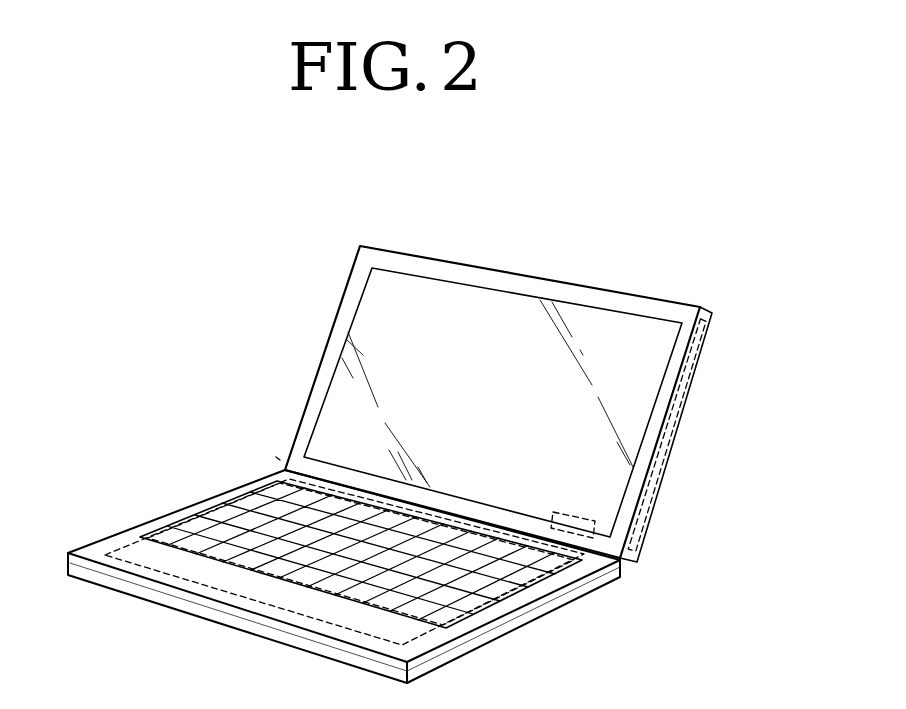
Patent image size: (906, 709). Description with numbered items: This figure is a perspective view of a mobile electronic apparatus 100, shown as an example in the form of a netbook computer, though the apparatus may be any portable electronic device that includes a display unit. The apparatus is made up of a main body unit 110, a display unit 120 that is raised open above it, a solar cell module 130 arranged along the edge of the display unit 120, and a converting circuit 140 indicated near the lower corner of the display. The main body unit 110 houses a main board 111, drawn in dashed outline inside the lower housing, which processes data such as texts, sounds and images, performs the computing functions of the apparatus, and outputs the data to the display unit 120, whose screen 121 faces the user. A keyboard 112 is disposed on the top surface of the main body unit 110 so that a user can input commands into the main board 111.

The mobile electronic apparatus 100 is at (190, 233).
The main body unit 110 is at (557, 617).
The main board 111 is at (157, 560).
The keyboard 112 is at (185, 520).
The display unit 120 is at (702, 378).
The display 121 is at (488, 305).
The solar cell module 130 is at (680, 433).
The converting circuit 140 is at (587, 521).